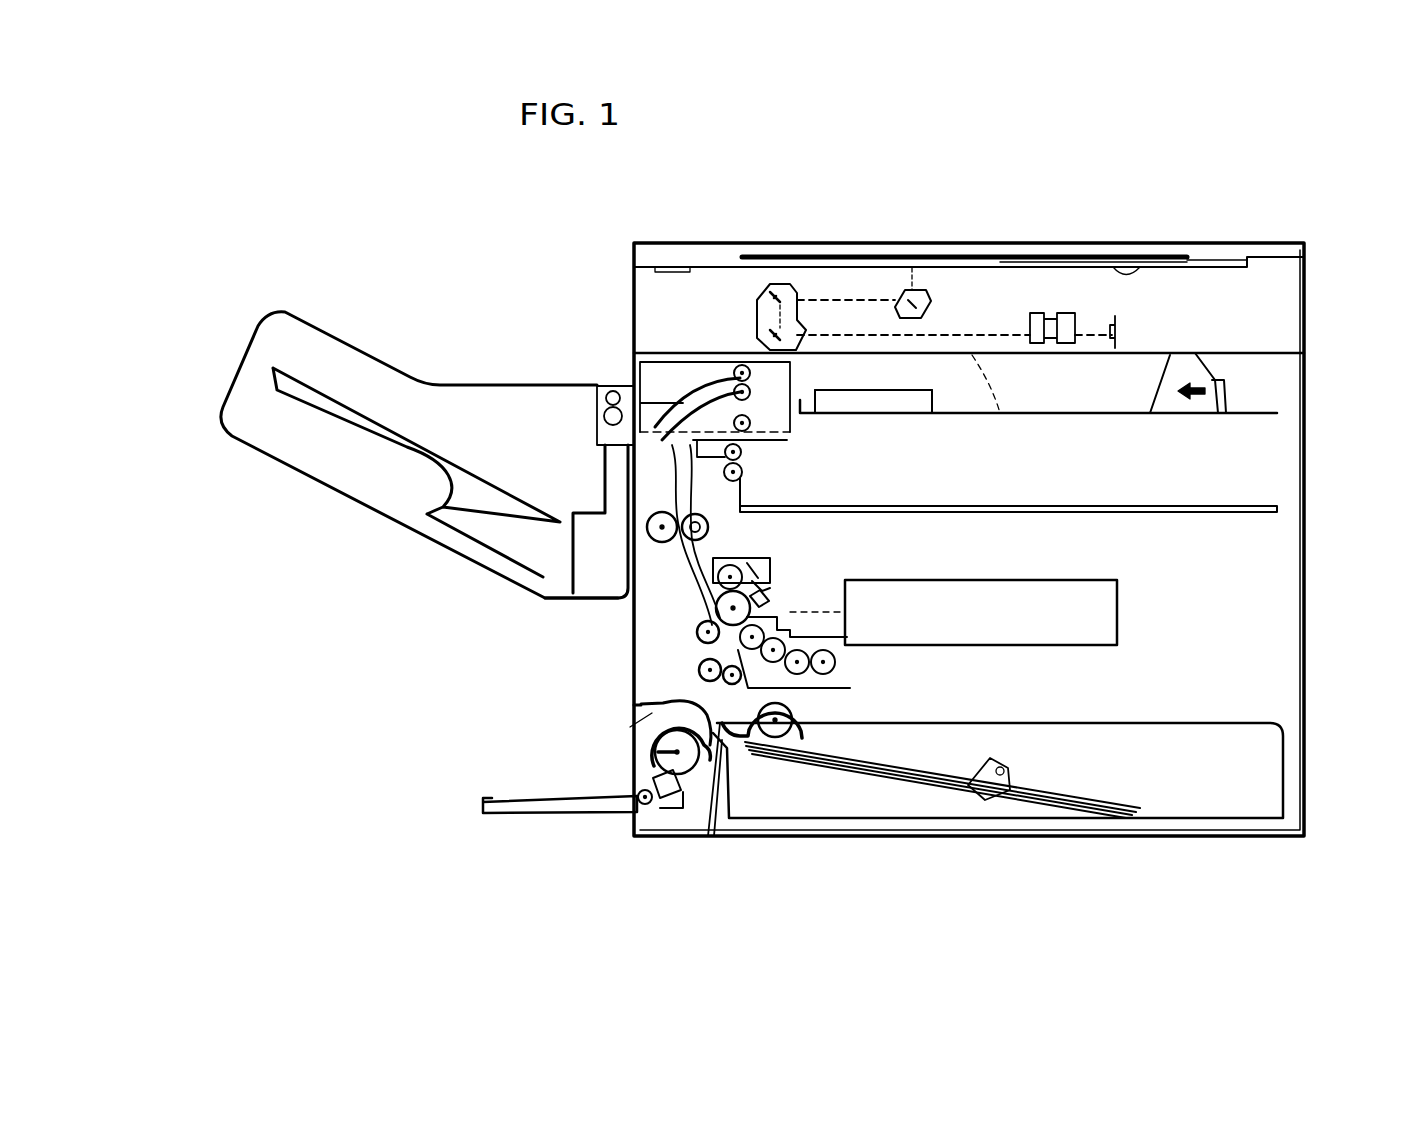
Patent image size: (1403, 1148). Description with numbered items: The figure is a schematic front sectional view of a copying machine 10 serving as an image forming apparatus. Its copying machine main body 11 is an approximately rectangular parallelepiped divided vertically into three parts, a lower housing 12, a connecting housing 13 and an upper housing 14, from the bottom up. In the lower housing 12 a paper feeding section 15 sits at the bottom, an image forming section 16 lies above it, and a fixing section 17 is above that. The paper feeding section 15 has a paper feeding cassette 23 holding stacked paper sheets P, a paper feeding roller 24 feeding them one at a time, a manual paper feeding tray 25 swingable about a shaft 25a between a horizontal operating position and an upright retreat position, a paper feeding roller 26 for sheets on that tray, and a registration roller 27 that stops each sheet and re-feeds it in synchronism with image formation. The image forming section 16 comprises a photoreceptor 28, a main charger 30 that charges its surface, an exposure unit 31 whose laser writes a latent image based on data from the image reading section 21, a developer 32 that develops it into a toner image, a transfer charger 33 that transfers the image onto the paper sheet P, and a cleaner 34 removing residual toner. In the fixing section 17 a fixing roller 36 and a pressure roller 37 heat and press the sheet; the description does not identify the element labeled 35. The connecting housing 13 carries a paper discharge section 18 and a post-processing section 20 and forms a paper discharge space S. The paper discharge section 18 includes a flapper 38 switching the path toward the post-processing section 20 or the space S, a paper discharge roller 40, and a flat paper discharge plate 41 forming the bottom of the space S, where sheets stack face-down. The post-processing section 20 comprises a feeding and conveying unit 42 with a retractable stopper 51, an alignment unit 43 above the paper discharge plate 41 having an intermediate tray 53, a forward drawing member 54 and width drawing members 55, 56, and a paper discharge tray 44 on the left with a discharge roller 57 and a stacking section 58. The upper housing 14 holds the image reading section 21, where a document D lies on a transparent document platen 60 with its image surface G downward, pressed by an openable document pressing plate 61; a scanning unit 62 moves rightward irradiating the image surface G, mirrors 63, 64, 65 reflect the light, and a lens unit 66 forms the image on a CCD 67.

The copying machine 10 is at (1008, 488).
The copying machine main body 11 is at (1318, 571).
The lower housing 12 is at (784, 615).
The connecting housing 13 is at (618, 498).
The upper housing 14 is at (956, 306).
The paper feeding section 15 is at (998, 786).
The image forming section 16 is at (927, 612).
The fixing section 17 is at (723, 536).
The paper discharge section 18 is at (757, 482).
The post-processing section 20 is at (894, 402).
The image reading section 21 is at (988, 256).
The paper feeding cassette 23 is at (1025, 723).
The paper feeding roller 24 is at (803, 713).
The manual paper feeding tray 25 is at (552, 809).
The shaft 25a is at (637, 808).
The paper feeding roller 26 is at (655, 750).
The registration roller 27 is at (680, 712).
The photoreceptor 28 is at (700, 660).
The main charger 30 is at (762, 606).
The exposure unit 31 is at (1000, 580).
The developer 32 is at (860, 670).
The transfer charger 33 is at (702, 640).
The cleaner 34 is at (772, 570).
The fixing device 35 is at (634, 581).
The fixing roller 36 is at (690, 545).
The pressure roller 37 is at (655, 528).
The flapper 38 is at (665, 458).
The paper discharge roller 40 is at (752, 452).
The paper discharge plate 41 is at (1012, 505).
The feeding and conveying unit 42 is at (688, 352).
The alignment unit 43 is at (1104, 420).
The paper discharge tray 44 is at (424, 422).
The stopper 51 is at (723, 357).
The intermediate tray 53 is at (1200, 353).
The forward drawing member 54 is at (1240, 383).
The width drawing member 55 is at (913, 426).
The width drawing member 56 is at (875, 413).
The discharge roller 57 is at (600, 395).
The stacking section 58 is at (365, 415).
The document platen 60 is at (1247, 265).
The document pressing plate 61 is at (1230, 241).
The scanning unit 62 is at (960, 298).
The mirror 63 is at (903, 300).
The mirror 64 is at (768, 292).
The mirror 65 is at (746, 352).
The lens unit 66 is at (1036, 318).
The CCD 67 is at (1120, 335).
The document D is at (1063, 248).
The image surface G is at (1140, 269).
The paper sheets P is at (1066, 818).
The paper discharge space S is at (1262, 455).